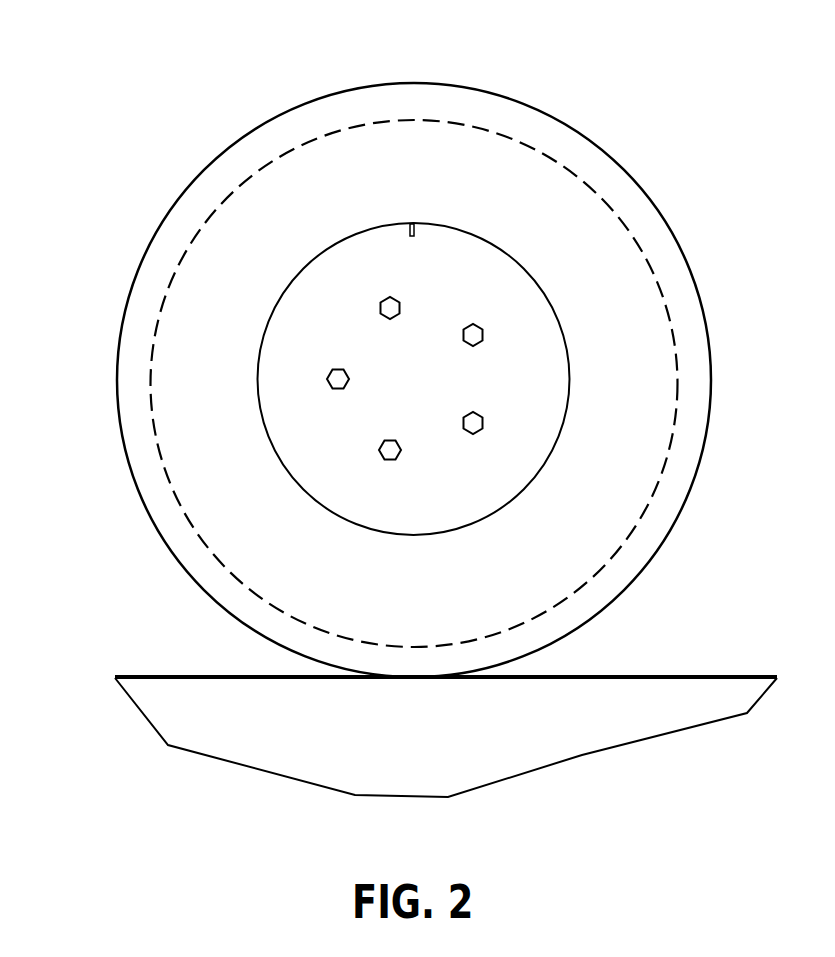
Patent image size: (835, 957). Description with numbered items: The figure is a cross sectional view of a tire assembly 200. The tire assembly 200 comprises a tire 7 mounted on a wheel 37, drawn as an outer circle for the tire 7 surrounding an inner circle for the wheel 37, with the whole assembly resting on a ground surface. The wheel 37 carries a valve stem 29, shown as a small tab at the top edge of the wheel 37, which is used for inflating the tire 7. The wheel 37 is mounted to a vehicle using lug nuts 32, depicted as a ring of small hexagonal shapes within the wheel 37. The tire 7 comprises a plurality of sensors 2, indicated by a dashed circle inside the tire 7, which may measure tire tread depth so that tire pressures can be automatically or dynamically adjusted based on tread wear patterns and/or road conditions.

The tire assembly 200 is at (130, 117).
The tire 7 is at (238, 140).
The sensors 2 is at (194, 238).
The wheel 37 is at (440, 535).
The valve stem 29 is at (408, 223).
The lug nuts 32 is at (380, 308).